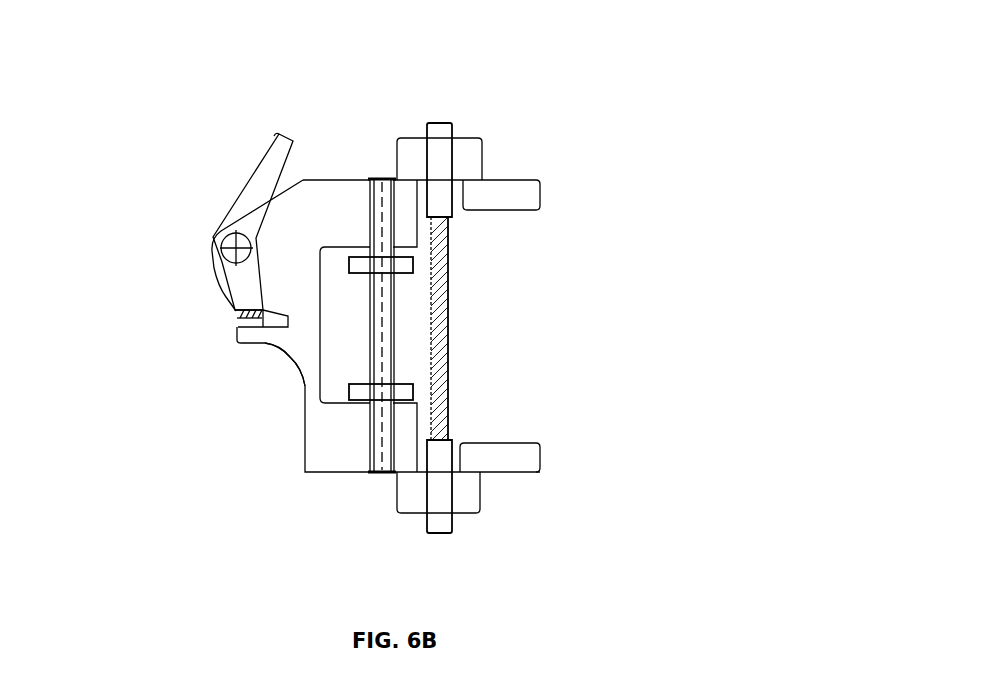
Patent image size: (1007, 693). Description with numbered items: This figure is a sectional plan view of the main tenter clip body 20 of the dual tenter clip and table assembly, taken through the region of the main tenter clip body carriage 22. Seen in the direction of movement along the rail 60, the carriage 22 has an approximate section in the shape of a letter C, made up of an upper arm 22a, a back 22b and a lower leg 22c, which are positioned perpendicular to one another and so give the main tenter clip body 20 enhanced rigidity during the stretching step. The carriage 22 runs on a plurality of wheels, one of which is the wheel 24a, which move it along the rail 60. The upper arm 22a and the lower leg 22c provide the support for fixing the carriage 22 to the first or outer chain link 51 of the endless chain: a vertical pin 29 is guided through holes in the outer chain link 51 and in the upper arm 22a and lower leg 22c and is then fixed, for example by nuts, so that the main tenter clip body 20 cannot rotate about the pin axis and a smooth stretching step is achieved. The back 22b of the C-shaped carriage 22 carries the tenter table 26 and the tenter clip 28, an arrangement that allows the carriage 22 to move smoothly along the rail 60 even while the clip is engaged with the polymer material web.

The main tenter clip body 20 is at (310, 203).
The main tenter clip body carriage 22 is at (160, 163).
The upper arm 22a is at (484, 192).
The back 22b is at (298, 335).
The lower leg 22c is at (468, 463).
The wheel 24a is at (425, 441).
The tenter table 26 is at (247, 333).
The tenter clip 28 is at (248, 182).
The vertical pin 29 is at (362, 181).
The first/outer chain link 51 is at (385, 393).
The rail 60 is at (420, 313).